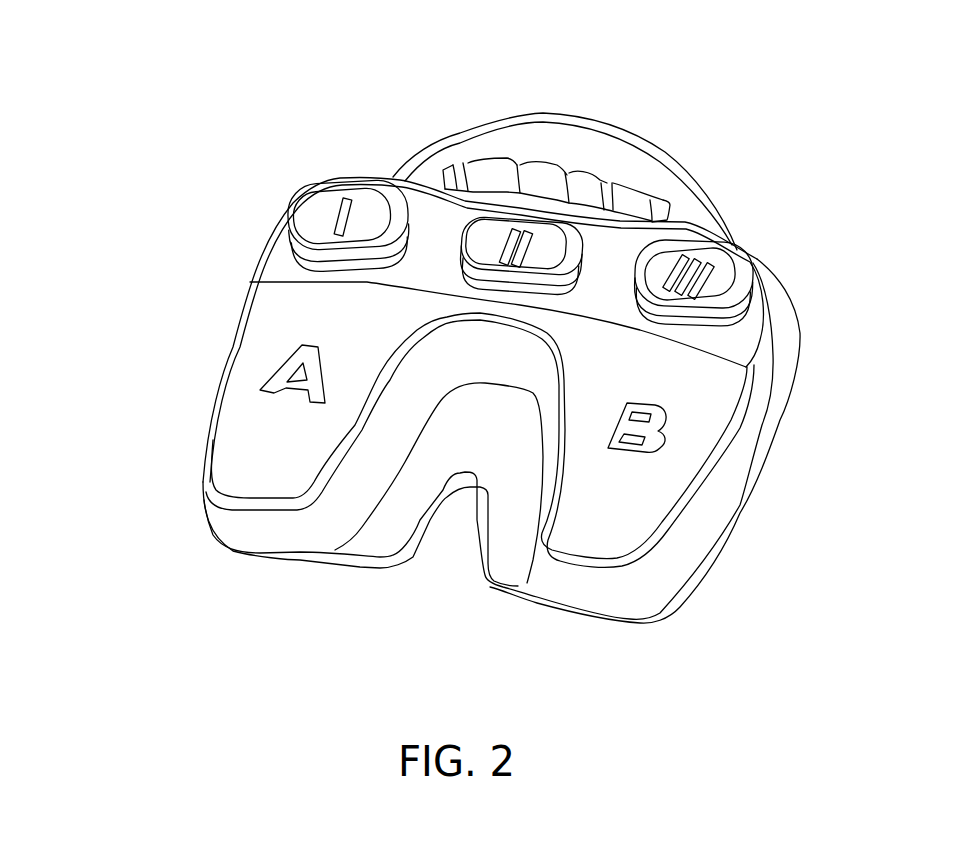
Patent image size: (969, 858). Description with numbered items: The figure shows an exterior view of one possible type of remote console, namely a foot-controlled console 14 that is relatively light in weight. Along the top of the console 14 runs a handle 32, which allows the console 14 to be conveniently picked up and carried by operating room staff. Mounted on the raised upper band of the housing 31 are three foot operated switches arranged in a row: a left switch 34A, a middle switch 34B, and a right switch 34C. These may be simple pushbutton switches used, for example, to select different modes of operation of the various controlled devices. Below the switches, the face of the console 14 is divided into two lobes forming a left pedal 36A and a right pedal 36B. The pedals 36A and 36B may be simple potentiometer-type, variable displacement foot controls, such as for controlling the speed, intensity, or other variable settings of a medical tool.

The foot-controlled console 14 is at (398, 121).
The housing 31 is at (229, 347).
The handle 32 is at (585, 127).
The left switch 34A is at (322, 222).
The middle switch 34B is at (550, 255).
The right switch 34C is at (716, 291).
The left pedal 36A is at (265, 473).
The right pedal 36B is at (633, 513).